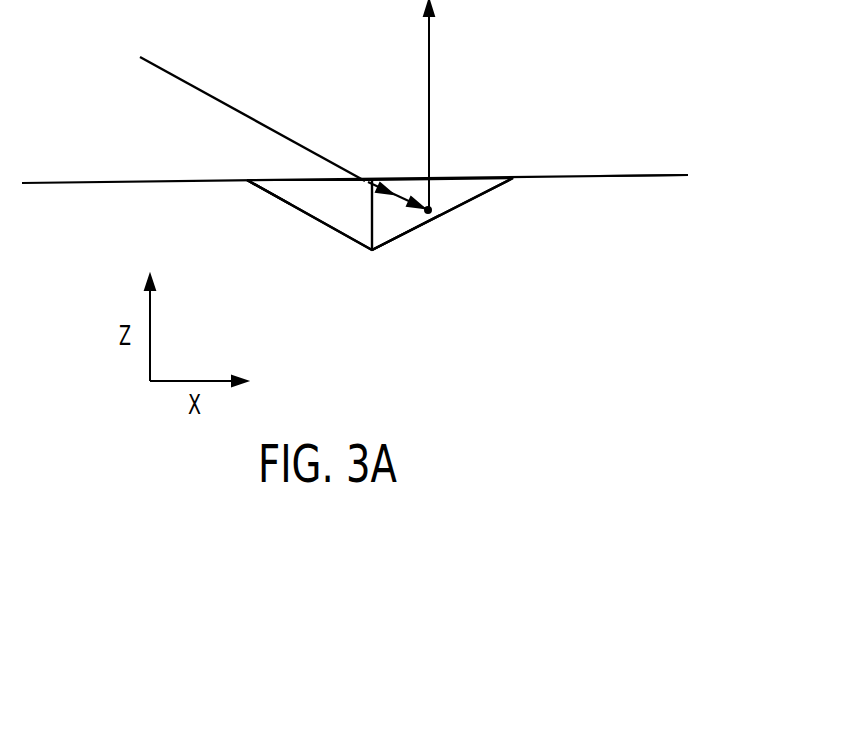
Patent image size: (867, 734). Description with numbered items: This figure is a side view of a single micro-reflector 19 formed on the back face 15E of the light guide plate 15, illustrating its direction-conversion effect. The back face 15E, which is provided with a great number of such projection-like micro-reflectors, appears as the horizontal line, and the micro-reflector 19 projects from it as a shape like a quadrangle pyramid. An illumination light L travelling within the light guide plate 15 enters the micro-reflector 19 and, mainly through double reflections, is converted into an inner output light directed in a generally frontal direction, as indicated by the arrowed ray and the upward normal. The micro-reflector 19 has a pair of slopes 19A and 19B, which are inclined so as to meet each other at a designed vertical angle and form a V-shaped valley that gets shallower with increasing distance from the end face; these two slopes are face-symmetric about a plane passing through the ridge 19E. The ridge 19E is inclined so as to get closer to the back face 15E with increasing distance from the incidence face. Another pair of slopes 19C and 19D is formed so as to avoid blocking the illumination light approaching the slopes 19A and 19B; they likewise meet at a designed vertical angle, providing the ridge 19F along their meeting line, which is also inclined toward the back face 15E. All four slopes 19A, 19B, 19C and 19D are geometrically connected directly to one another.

The light guide plate 15 is at (552, 163).
The back face 15E is at (615, 177).
The micro-reflector 19 is at (280, 248).
The slope 19A is at (455, 202).
The slope 19B is at (468, 188).
The slope 19C is at (340, 217).
The slope 19D is at (292, 192).
The ridge 19E is at (422, 227).
The ridge 19F is at (270, 197).
The illumination light L is at (202, 92).